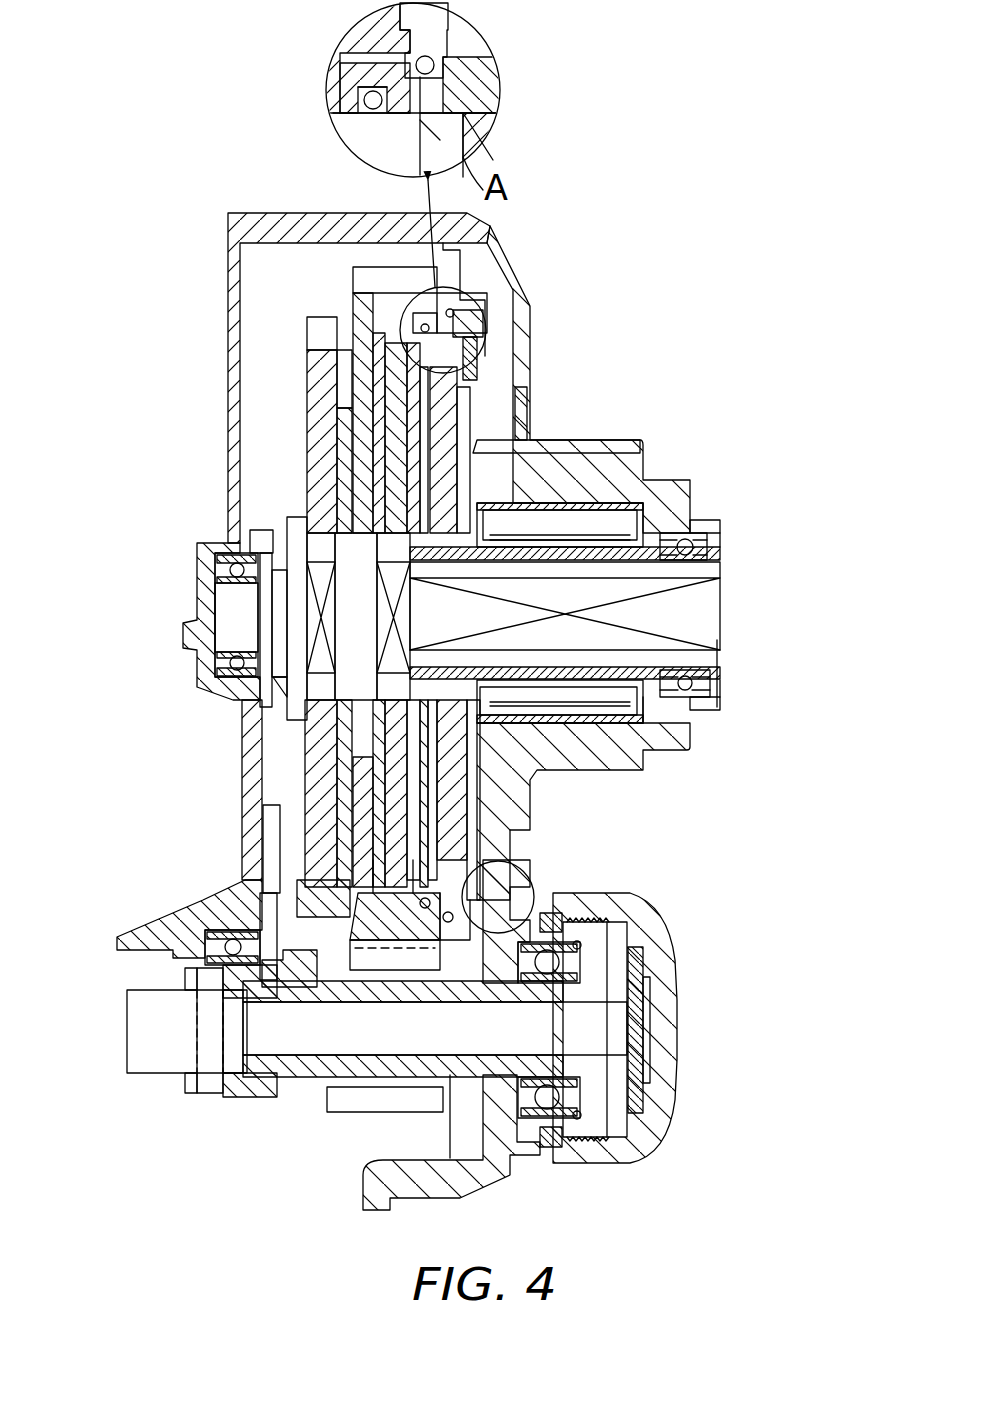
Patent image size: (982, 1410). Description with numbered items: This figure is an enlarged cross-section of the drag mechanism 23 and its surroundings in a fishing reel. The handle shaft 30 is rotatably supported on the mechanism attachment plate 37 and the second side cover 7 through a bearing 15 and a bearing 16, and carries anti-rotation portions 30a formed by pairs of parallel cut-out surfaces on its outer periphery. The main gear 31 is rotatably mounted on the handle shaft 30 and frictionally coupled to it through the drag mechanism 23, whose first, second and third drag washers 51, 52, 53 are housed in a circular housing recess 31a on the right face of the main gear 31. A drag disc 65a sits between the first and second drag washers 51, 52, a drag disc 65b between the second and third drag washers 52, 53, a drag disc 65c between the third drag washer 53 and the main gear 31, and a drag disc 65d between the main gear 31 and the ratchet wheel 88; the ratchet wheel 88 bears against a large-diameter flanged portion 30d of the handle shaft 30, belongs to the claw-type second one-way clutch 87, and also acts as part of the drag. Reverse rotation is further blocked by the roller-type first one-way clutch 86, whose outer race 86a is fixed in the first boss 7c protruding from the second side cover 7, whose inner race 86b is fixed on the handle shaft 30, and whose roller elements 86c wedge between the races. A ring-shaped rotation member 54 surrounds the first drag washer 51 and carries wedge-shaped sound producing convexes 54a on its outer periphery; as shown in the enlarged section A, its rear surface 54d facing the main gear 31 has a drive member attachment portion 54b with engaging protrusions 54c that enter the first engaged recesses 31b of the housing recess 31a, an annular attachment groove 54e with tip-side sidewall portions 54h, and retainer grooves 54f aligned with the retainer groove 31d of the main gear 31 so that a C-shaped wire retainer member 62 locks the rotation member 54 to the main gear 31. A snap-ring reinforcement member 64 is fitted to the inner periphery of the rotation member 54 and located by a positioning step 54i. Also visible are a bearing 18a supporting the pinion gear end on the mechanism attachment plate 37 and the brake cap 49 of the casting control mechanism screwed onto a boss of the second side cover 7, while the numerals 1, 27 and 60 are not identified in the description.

The drive unit 1 is at (537, 258).
The second side cover 7 is at (540, 855).
The first boss 7c is at (618, 497).
The bearing 15 is at (227, 543).
The bearing 16 is at (705, 540).
The bearing 18a is at (200, 920).
The drag mechanism 23 is at (462, 353).
The stopper 27 is at (490, 323).
The handle shaft 30 is at (672, 690).
The anti-rotation portions 30a is at (565, 605).
The large-diameter flanged portion 30d is at (297, 517).
The main gear 31 is at (387, 345).
The housing recess 31a is at (385, 343).
The first engaged recesses 31b is at (363, 255).
The retainer groove 31d is at (428, 830).
The mechanism attachment plate 37 is at (265, 815).
The brake cap 49 is at (660, 1040).
The first drag washer 51 is at (455, 900).
The second drag washer 52 is at (430, 885).
The third drag washer 53 is at (345, 960).
The rotation member 54 is at (493, 310).
The sound producing convexes 54a is at (460, 297).
The drive member attachment portion 54b is at (433, 123).
The engaging protrusions 54c is at (360, 70).
The rear surface 54d is at (350, 105).
The annular attachment groove 54e is at (498, 85).
The retainer groove 54f is at (345, 95).
The tip-side sidewall portions 54h is at (477, 53).
The positioning step 54i is at (562, 922).
The ball 60 is at (395, 47).
The retainer member 62 is at (340, 100).
The reinforcement member 64 is at (485, 887).
The drag disc 65a is at (390, 893).
The drag disc 65b is at (363, 895).
The drag disc 65c is at (313, 947).
The drag disc 65d is at (310, 700).
The first one-way clutch 86 is at (690, 490).
The outer race 86a is at (545, 525).
The inner race 86b is at (707, 547).
The roller elements 86c is at (663, 535).
The second one-way clutch 87 is at (290, 390).
The ratchet wheel 88 is at (310, 317).